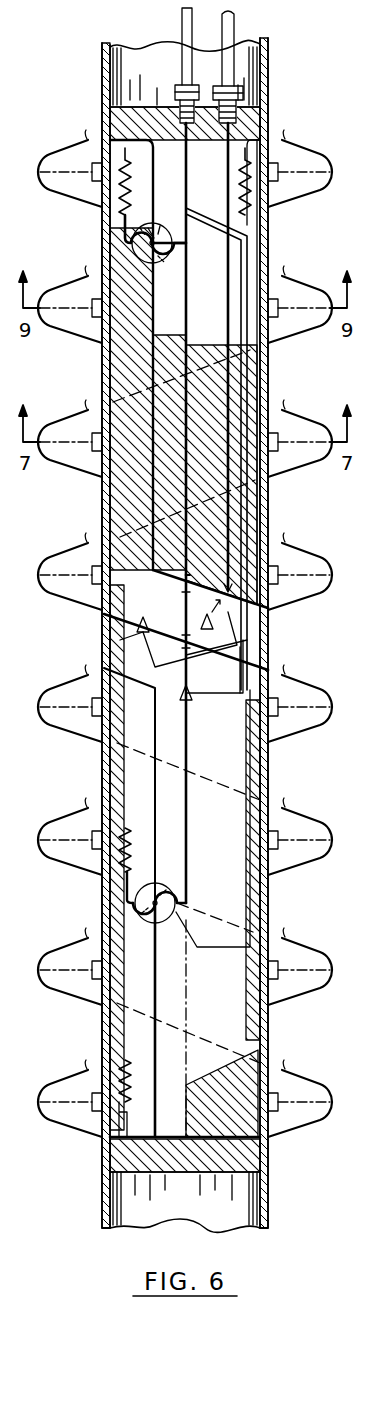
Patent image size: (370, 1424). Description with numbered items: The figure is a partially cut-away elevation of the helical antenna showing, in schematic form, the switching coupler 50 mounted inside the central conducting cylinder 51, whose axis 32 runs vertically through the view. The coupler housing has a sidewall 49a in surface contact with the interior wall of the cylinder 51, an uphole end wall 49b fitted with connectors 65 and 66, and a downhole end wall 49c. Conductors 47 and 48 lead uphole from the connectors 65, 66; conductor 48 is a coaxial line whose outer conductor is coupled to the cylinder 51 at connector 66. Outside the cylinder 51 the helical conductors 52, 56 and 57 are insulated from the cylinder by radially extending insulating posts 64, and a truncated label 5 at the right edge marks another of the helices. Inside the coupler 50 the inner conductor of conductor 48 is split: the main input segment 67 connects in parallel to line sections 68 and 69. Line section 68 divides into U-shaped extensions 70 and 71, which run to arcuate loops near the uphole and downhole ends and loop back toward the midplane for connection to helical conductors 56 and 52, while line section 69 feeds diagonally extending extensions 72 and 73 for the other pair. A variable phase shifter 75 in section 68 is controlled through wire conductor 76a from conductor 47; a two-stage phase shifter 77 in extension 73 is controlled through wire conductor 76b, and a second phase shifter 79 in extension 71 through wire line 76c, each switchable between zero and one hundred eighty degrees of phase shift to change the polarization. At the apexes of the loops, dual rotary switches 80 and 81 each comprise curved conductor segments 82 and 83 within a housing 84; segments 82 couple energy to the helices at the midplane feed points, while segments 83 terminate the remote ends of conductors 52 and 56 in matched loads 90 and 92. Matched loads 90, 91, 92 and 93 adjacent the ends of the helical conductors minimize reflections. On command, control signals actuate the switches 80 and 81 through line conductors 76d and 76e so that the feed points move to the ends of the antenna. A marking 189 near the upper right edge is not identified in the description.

The helical fin 5 is at (330, 696).
The axis 32 is at (188, 1089).
The electrical conductor 47 is at (182, 28).
The input/output conductor 48 is at (236, 22).
The sidewall 49a is at (255, 363).
The end wall 49b is at (150, 92).
The end wall 49c is at (198, 1180).
The switching coupler 50 is at (212, 771).
The central conducting cylinder 51 is at (268, 907).
The helical conductor 52 is at (85, 735).
The helical conductor 56 is at (330, 593).
The helical conductor 57 is at (80, 547).
The insulating posts 64 is at (61, 832).
The connector 65 is at (178, 86).
The connector 66 is at (243, 90).
The main input segment 67 is at (233, 528).
The line section 68 is at (212, 634).
The line section 69 is at (230, 650).
The U-shaped extension 70 is at (187, 323).
The U-shaped extension 71 is at (188, 824).
The diagonally extending extension 72 is at (239, 690).
The diagonally extending extension 73 is at (143, 616).
The variable phase shifter 75 is at (200, 620).
The wire conductor 76a is at (233, 490).
The wire conductor 76b is at (145, 651).
The wire line 76c is at (207, 695).
The line conductor 76d is at (231, 948).
The line conductor 76e is at (186, 205).
The two-stage phase shifter 77 is at (137, 631).
The phase shifter 79 is at (182, 702).
The dual rotary switch 80 is at (173, 890).
The dual rotary switch 81 is at (162, 224).
The curved conductor segments 82 is at (164, 252).
The curved conductor segments 83 is at (137, 236).
The housing 84 is at (148, 262).
The matched load 90 is at (125, 853).
The matched load 91 is at (113, 1072).
The matched load 92 is at (122, 168).
The matched load 93 is at (250, 195).
The reference 189 is at (355, 247).